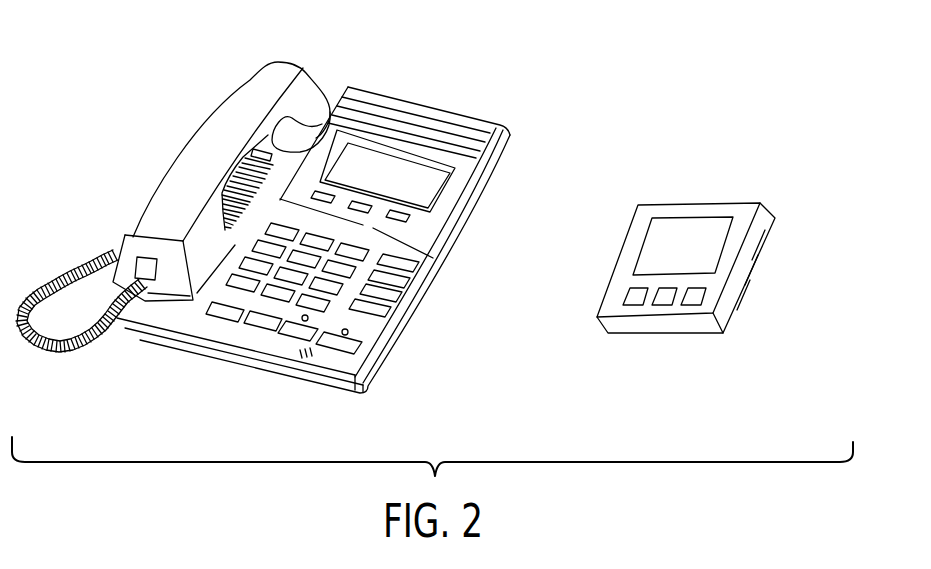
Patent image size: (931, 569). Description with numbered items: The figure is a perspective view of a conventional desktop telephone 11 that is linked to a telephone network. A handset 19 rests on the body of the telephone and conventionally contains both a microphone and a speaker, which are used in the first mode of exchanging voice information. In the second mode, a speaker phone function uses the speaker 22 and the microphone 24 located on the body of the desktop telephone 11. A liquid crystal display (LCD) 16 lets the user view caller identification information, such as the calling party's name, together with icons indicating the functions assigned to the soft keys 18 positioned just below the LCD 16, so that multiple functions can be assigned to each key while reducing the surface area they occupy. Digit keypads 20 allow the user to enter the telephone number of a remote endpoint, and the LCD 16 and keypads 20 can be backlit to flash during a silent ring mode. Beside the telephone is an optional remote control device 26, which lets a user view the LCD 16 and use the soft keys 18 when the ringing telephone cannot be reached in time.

The conventional desktop telephone 11 is at (188, 346).
The liquid crystal display 16 is at (403, 160).
The soft keys 18 is at (407, 220).
The handset 19 is at (282, 67).
The digit keypads 20 is at (400, 248).
The speaker 22 is at (243, 187).
The microphone 24 is at (315, 353).
The remote control device 26 is at (755, 277).